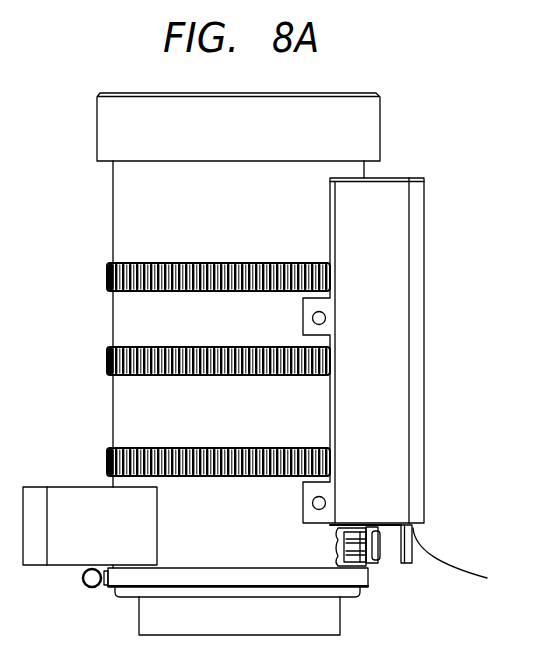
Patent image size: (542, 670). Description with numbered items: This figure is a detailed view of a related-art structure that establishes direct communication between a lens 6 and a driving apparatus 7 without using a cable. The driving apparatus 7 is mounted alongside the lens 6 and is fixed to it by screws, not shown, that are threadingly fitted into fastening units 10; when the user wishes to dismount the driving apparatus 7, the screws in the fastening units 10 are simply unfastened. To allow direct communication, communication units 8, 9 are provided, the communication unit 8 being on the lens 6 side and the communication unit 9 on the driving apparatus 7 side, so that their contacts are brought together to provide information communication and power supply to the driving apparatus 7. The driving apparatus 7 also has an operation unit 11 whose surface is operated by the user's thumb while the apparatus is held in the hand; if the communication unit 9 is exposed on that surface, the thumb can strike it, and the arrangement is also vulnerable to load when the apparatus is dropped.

The lens 6 is at (104, 222).
The driving apparatus 7 is at (436, 236).
The communication unit 8 is at (340, 549).
The communication unit 9 is at (378, 547).
The fastening units 10 is at (322, 497).
The operation unit 11 is at (464, 559).